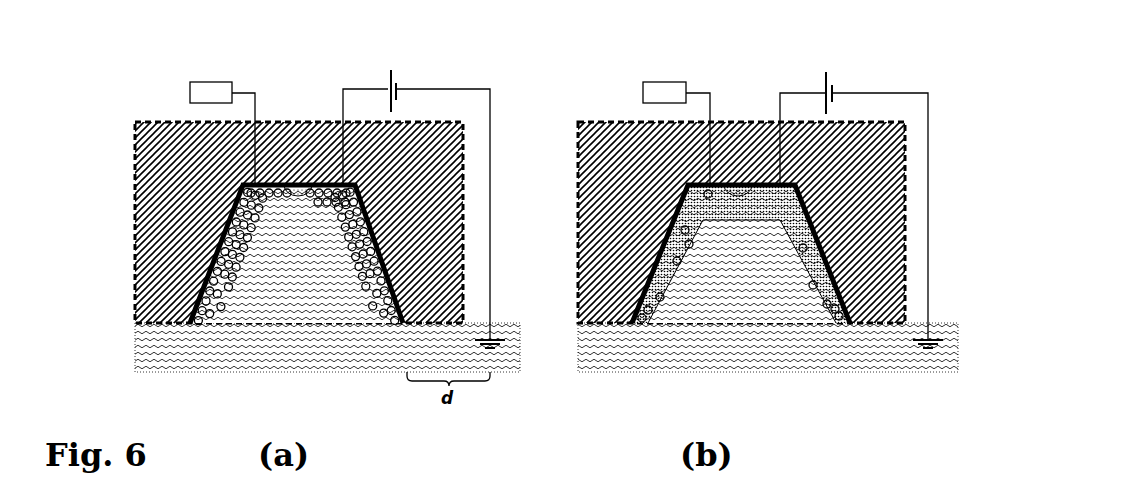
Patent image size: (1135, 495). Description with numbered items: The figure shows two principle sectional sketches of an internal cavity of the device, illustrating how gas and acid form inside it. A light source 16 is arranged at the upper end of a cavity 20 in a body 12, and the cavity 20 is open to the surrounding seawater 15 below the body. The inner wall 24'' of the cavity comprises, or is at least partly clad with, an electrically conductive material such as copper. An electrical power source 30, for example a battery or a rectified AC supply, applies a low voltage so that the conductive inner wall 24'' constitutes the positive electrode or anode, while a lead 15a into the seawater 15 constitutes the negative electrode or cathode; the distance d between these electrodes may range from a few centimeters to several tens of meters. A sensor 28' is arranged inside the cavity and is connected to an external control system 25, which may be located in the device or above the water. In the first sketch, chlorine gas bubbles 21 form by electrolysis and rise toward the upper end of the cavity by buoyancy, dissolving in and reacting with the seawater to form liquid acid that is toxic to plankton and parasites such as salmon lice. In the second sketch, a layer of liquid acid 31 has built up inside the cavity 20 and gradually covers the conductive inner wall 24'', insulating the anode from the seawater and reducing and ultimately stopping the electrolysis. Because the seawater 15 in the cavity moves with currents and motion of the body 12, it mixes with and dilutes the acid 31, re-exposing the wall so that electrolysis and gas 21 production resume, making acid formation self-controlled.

In FIG. 6A, the body 12 is at (175, 120).
In FIG. 6B, the body 12 is at (614, 120).
In FIG. 6A, the seawater 15 is at (163, 364).
In FIG. 6B, the seawater 15 is at (604, 364).
In FIG. 6A, the lead 15a is at (478, 352).
In FIG. 6B, the lead 15a is at (917, 352).
In FIG. 6A, the light source 16 is at (300, 199).
In FIG. 6B, the light source 16 is at (737, 182).
In FIG. 6A, the cavity 20 is at (314, 269).
In FIG. 6B, the cavity 20 is at (770, 269).
In FIG. 6A, the chlorine gas bubbles 21 is at (218, 306).
In FIG. 6B, the chlorine gas bubbles 21 is at (662, 302).
In FIG. 6A, the inner wall 24'' is at (234, 254).
In FIG. 6B, the inner wall 24'' is at (677, 254).
In FIG. 6A, the external control system 25 is at (206, 80).
In FIG. 6B, the external control system 25 is at (654, 80).
In FIG. 6A, the sensor 28' is at (305, 294).
In FIG. 6B, the sensor 28' is at (758, 298).
In FIG. 6A, the electrical power source 30 is at (406, 57).
In FIG. 6B, the electrical power source 30 is at (841, 60).
In FIG. 6B, the layer of liquid acid 31 is at (762, 206).